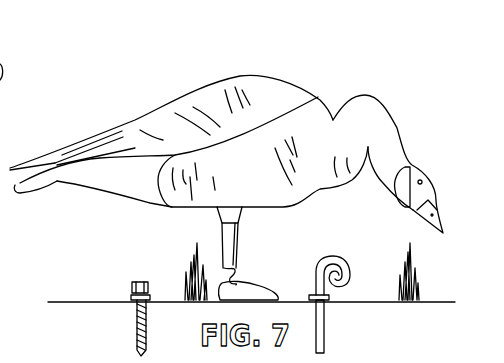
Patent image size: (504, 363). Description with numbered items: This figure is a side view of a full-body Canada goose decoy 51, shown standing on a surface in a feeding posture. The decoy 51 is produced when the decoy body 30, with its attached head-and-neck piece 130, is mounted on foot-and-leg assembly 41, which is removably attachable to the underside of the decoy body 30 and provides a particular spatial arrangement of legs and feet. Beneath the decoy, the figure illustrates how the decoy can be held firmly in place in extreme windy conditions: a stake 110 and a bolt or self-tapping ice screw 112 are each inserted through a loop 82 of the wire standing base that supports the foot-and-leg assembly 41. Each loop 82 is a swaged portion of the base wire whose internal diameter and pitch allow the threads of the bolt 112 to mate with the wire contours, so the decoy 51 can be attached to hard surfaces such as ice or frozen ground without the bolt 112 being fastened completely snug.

The decoy body 30 is at (150, 94).
The foot-and-leg assembly 41 is at (192, 232).
The full-body Canada goose decoy 51 is at (228, 175).
The loop 82 is at (111, 317).
The stake 110 is at (330, 323).
The bolt or self-tapping ice screw 112 is at (132, 286).
The head-and-neck piece 130 is at (384, 100).